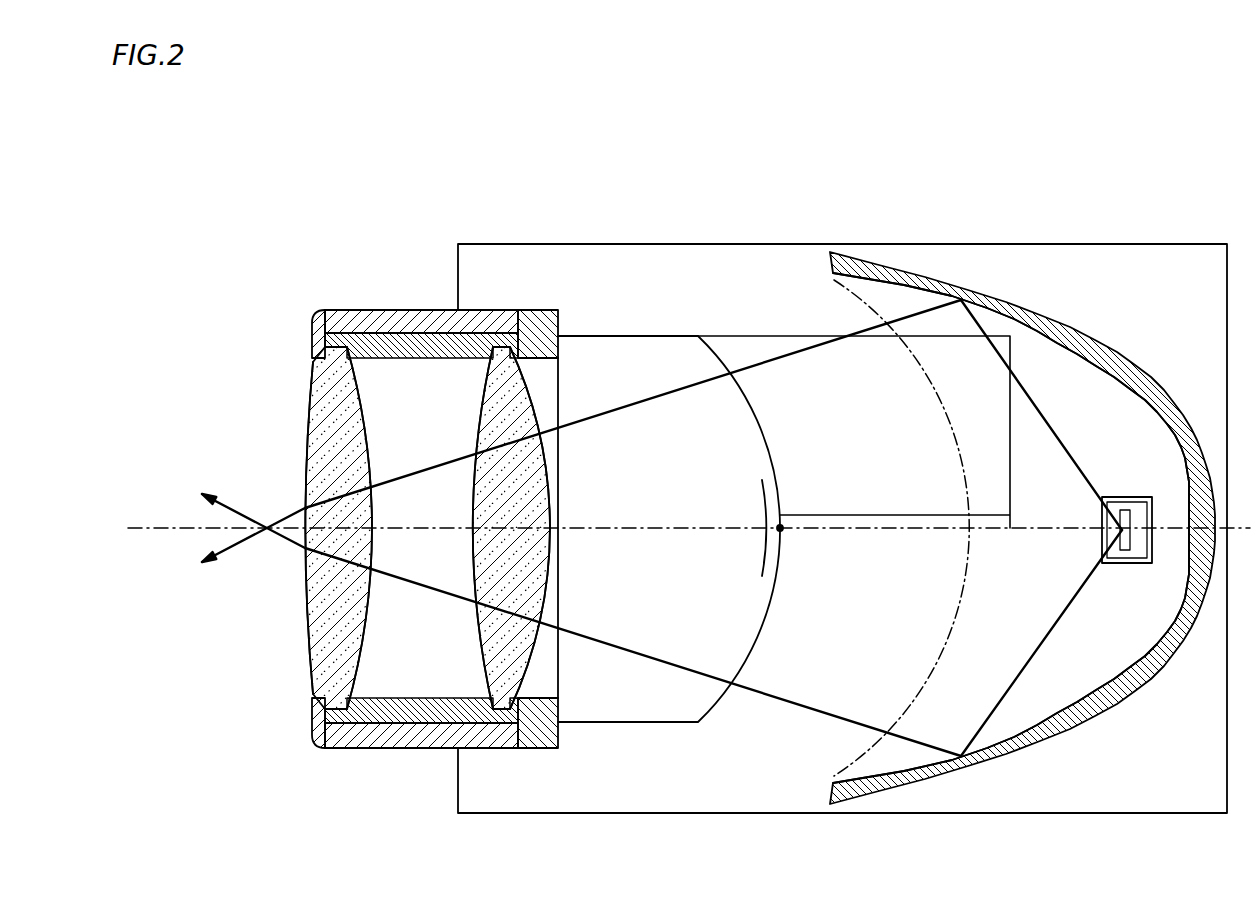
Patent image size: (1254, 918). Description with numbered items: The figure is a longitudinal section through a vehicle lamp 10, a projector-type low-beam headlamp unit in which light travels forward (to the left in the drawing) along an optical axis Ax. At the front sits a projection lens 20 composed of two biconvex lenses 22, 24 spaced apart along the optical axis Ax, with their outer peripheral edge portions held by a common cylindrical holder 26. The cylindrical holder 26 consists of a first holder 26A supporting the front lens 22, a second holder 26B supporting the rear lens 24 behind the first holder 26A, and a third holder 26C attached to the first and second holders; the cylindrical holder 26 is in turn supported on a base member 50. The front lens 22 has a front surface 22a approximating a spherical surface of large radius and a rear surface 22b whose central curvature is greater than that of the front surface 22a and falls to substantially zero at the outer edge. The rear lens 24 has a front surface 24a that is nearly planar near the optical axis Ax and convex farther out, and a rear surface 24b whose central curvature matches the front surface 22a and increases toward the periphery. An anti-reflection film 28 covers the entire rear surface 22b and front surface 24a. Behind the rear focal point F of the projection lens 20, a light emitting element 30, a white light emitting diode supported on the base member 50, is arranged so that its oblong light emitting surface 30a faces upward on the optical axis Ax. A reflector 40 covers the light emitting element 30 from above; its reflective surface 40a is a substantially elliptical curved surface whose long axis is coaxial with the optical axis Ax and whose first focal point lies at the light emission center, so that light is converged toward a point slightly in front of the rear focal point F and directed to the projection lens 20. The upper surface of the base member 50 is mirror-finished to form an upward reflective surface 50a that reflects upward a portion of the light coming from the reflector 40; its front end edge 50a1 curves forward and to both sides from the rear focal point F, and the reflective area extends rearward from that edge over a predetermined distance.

The vehicle lamp 10 is at (336, 165).
The projection lens 20 is at (400, 268).
The lens 22 is at (313, 395).
The front surface of the lens 22a is at (306, 583).
The rear surface of the lens 22b is at (369, 587).
The lens 24 is at (486, 392).
The front surface of the lens 24a is at (474, 498).
The rear surface of the lens 24b is at (549, 497).
The cylindrical holder 26 is at (360, 751).
The first holder 26A is at (440, 748).
The second holder 26B is at (538, 748).
The third holder 26C is at (330, 750).
The anti-reflection film 28 is at (418, 748).
The light emitting element 30 is at (1103, 535).
The light emitting surface 30a is at (1125, 510).
The reflector 40 is at (1098, 332).
The reflective surface 40a is at (1122, 670).
The base member 50 is at (930, 243).
The upward reflective surface 50a is at (805, 457).
The front end edge 50a1 is at (776, 562).
The rear focal point F is at (779, 527).
The optical axis Ax is at (188, 524).